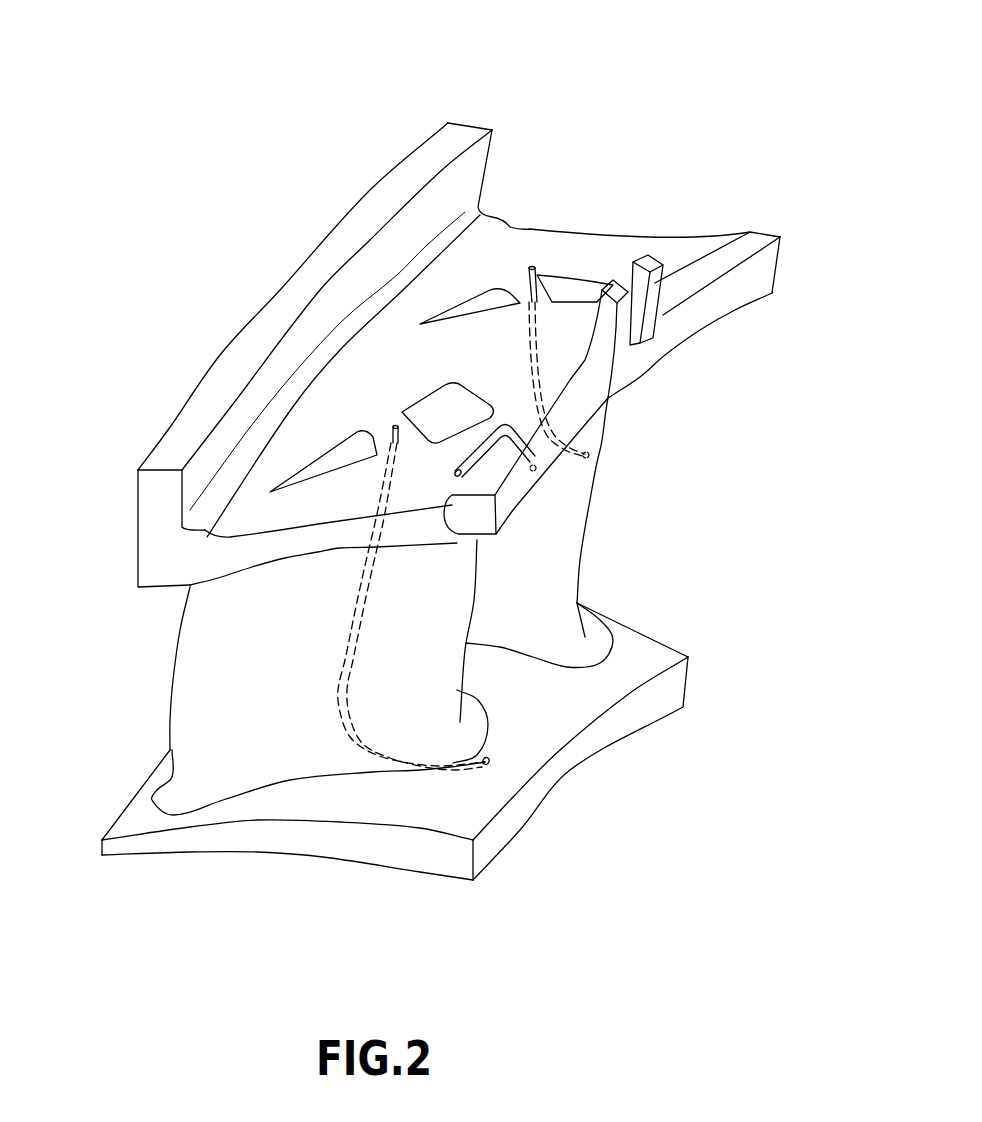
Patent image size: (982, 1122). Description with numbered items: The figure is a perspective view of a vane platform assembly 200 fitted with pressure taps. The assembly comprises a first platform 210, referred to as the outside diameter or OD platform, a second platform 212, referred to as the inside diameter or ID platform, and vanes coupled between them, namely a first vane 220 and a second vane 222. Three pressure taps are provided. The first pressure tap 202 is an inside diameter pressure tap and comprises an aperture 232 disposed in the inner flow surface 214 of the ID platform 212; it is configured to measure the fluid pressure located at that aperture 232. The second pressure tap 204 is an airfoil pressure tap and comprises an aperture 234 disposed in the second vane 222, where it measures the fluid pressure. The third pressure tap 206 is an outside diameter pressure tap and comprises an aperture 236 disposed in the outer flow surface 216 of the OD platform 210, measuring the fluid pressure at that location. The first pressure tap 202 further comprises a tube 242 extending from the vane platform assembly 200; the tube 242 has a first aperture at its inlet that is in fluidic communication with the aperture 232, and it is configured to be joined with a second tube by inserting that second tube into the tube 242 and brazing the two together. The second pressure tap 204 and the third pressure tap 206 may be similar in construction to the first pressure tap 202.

The vane platform assembly 200 is at (707, 78).
The first pressure tap 202 is at (395, 394).
The second pressure tap 204 is at (535, 251).
The third pressure tap 206 is at (452, 498).
The first platform 210 is at (682, 237).
The second platform 212 is at (622, 750).
The inner flow surface 214 is at (653, 644).
The outer flow surface 216 is at (706, 350).
The first vane 220 is at (172, 682).
The second vane 222 is at (587, 533).
The aperture 232 is at (502, 771).
The aperture 234 is at (603, 457).
The aperture 236 is at (541, 483).
The tube 242 is at (392, 430).